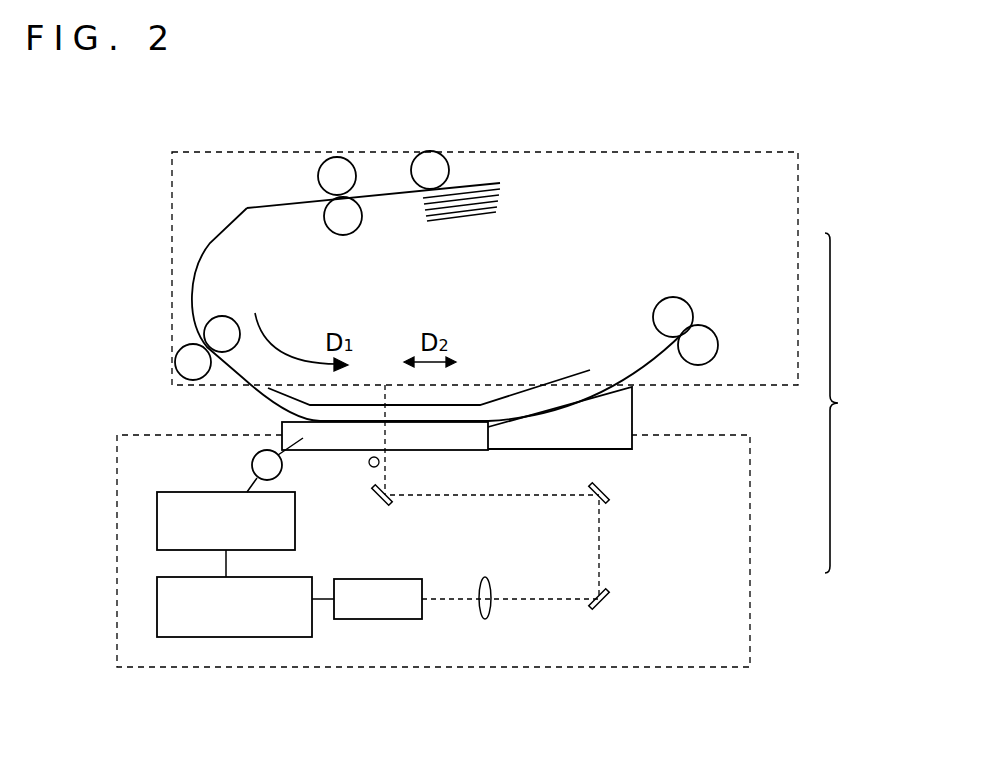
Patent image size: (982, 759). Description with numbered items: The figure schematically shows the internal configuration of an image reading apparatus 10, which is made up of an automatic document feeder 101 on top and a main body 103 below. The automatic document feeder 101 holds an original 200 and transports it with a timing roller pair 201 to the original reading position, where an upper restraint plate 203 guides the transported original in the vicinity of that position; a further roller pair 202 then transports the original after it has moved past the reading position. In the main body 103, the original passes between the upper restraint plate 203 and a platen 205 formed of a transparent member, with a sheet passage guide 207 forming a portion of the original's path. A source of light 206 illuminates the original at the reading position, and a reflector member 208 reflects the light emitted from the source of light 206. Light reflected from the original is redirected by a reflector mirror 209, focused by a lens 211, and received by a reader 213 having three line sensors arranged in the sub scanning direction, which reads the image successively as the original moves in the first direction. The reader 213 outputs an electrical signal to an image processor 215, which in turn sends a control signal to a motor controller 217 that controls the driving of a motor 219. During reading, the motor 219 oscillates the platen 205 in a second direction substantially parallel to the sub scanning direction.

The image reading apparatus 10 is at (847, 403).
The automatic document feeder 101 is at (172, 206).
The main body 103 is at (117, 610).
The original 200 is at (483, 186).
The timing roller pair 201 is at (188, 362).
The roller pair 202 is at (678, 307).
The upper restraint plate 203 is at (573, 370).
The platen 205 is at (448, 450).
The source of light 206 is at (370, 466).
The sheet passage guide 207 is at (628, 413).
The reflector member 208 is at (398, 463).
The reflector mirror 209 is at (380, 503).
The lens 211 is at (490, 610).
The reader 213 is at (380, 620).
The image processor 215 is at (217, 637).
The motor controller 217 is at (157, 522).
The motor 219 is at (252, 464).